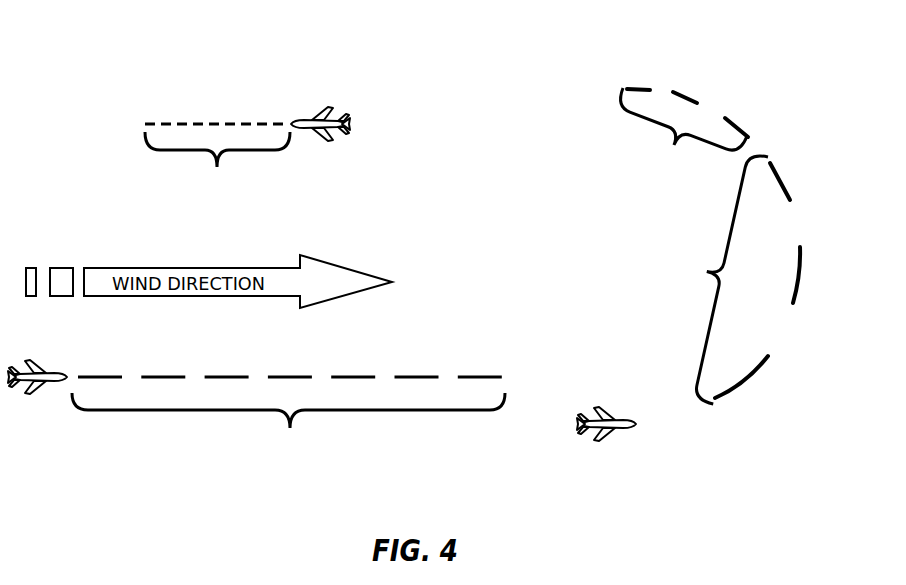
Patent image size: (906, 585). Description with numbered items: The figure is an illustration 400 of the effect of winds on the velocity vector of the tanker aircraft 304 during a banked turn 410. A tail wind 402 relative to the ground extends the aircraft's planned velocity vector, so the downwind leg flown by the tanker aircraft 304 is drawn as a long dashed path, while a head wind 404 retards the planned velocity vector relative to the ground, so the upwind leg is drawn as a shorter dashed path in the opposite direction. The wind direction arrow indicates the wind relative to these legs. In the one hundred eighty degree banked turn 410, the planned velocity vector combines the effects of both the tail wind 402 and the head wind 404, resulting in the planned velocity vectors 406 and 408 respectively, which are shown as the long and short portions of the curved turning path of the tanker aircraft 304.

The tanker aircraft 304 is at (326, 120).
The illustration of effect of winds on a velocity vector 400 is at (556, 61).
The tail wind 402 is at (288, 426).
The head wind 404 is at (217, 170).
The planned velocity vector 406 is at (734, 276).
The planned velocity vector 408 is at (679, 129).
The banked turn 410 is at (703, 406).